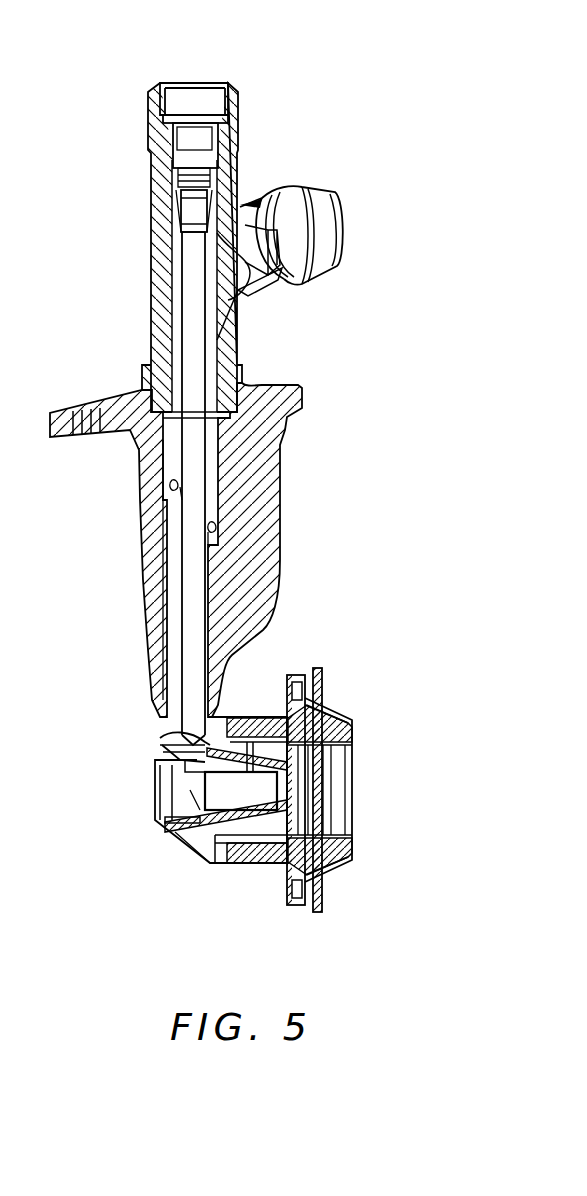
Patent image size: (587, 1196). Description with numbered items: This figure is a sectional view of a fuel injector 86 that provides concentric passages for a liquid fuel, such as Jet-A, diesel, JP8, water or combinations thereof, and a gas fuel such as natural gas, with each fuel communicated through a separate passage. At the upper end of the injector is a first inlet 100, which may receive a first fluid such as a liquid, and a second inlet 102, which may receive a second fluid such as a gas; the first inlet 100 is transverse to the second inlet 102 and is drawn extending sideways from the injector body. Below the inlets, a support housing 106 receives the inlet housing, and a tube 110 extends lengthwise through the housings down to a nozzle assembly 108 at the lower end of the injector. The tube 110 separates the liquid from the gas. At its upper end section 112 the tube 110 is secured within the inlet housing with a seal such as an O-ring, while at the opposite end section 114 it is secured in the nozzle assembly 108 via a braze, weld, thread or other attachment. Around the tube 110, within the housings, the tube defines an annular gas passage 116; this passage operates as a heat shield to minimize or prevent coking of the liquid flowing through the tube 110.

The fuel injector 86 is at (404, 373).
The first inlet 100 is at (254, 101).
The second inlet 102 is at (302, 176).
The support housing 106 is at (290, 518).
The nozzle assembly 108 is at (352, 690).
The tube 110 is at (193, 352).
The end section 112 is at (185, 215).
The opposite end section 114 is at (191, 735).
The annular gas passage 116 is at (178, 532).